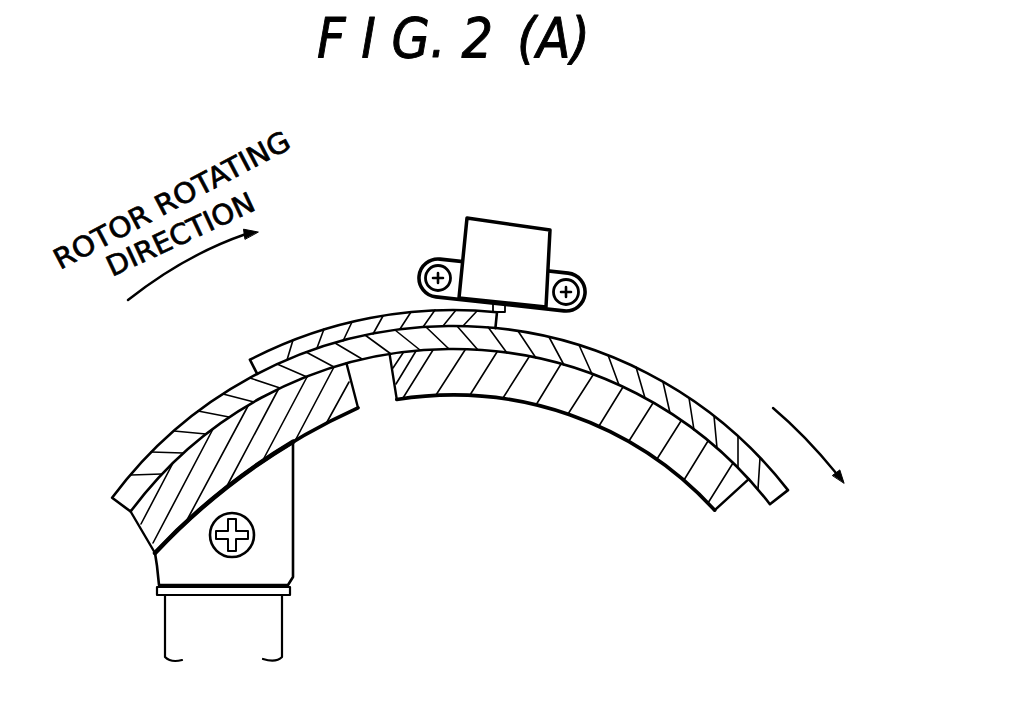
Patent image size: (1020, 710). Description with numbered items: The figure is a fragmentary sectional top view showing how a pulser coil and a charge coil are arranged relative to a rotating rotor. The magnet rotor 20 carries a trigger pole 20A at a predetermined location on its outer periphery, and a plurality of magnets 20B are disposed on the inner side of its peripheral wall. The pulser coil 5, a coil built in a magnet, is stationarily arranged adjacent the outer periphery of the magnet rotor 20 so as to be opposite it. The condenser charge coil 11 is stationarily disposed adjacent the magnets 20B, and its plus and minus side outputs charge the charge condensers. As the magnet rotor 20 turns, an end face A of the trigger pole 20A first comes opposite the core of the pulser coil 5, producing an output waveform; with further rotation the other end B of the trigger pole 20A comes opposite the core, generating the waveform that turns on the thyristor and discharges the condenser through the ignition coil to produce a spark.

The pulser coil 5 is at (616, 233).
The magnet rotor 20 is at (467, 395).
The trigger pole 20A is at (371, 296).
The magnet 20B is at (440, 451).
The condenser charge coil 11 is at (492, 551).
The end face of trigger pole A is at (505, 316).
The other end of trigger pole B is at (248, 368).